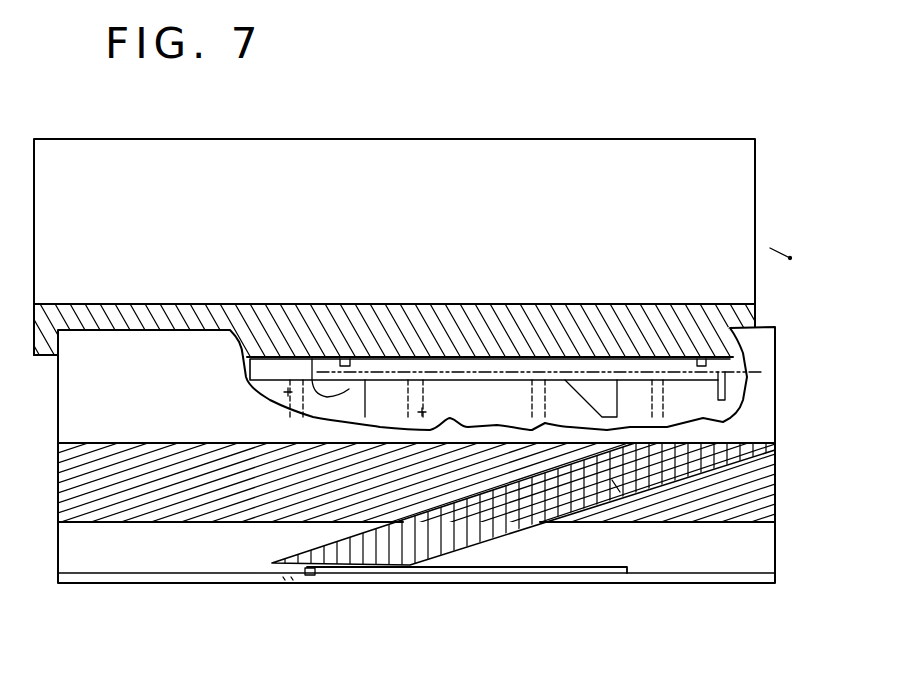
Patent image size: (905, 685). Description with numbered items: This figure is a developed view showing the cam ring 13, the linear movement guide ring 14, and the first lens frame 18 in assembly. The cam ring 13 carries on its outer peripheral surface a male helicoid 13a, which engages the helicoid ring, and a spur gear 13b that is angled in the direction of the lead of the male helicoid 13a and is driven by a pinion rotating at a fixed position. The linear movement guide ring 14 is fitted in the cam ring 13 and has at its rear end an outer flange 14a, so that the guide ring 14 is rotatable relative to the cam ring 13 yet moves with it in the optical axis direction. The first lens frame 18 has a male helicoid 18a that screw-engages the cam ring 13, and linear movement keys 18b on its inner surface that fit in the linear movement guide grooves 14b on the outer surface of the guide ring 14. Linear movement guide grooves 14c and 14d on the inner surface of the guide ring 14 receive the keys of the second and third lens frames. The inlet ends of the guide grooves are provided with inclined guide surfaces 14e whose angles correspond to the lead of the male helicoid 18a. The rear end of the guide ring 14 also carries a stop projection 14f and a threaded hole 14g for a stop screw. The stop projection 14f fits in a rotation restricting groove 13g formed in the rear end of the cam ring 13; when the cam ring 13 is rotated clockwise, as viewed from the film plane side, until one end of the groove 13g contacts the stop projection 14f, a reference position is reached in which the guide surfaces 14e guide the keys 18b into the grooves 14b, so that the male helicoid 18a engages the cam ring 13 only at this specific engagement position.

The first lens frame 18 is at (695, 150).
The male helicoid 18a is at (610, 318).
The linear movement keys 18b is at (355, 357).
The cam ring 13 is at (763, 408).
The male helicoid 13a is at (773, 487).
The spur gear 13b is at (773, 543).
The rotation restricting groove 13g is at (527, 575).
The linear movement guide ring 14 is at (443, 387).
The outer flange 14a is at (715, 585).
The linear movement guide grooves 14b is at (368, 395).
The linear movement guide groove 14c is at (460, 372).
The linear movement guide groove 14d is at (267, 378).
The inclined guide surfaces 14e is at (312, 359).
The stop projection 14f is at (313, 585).
The threaded hole 14g is at (283, 580).